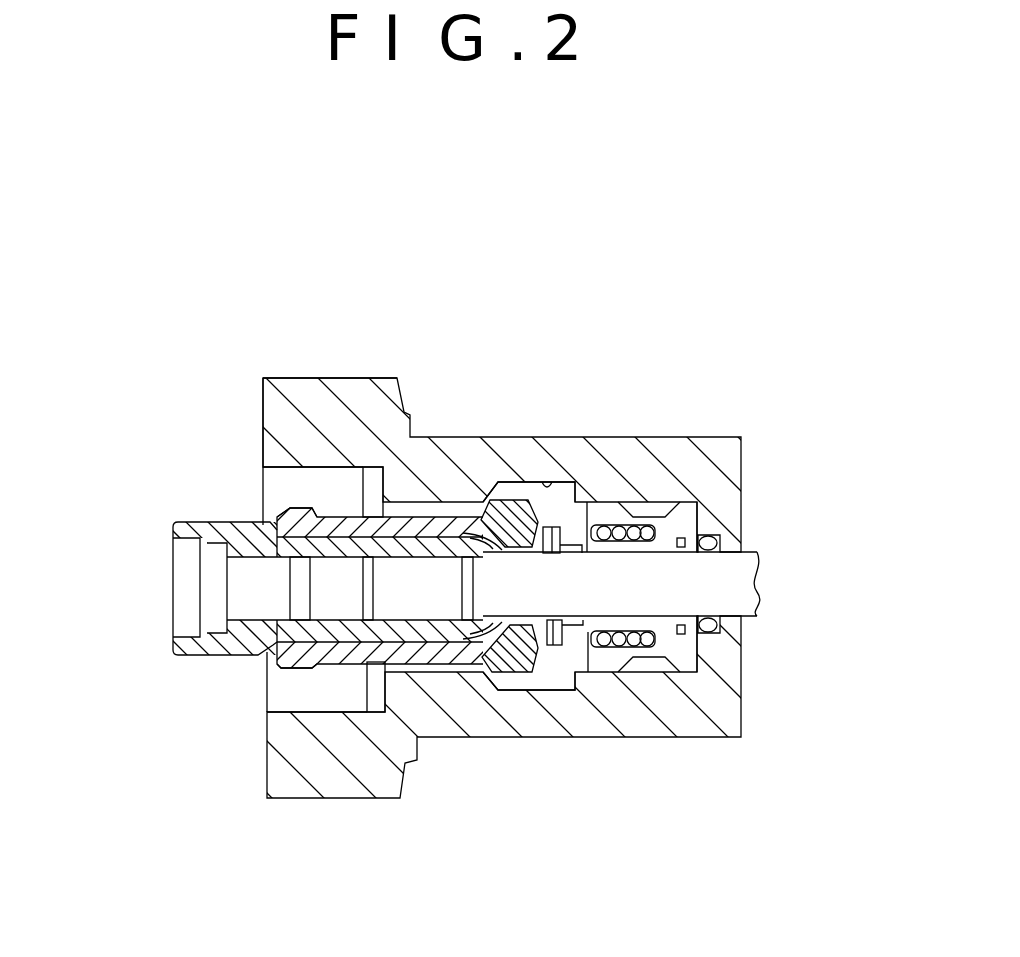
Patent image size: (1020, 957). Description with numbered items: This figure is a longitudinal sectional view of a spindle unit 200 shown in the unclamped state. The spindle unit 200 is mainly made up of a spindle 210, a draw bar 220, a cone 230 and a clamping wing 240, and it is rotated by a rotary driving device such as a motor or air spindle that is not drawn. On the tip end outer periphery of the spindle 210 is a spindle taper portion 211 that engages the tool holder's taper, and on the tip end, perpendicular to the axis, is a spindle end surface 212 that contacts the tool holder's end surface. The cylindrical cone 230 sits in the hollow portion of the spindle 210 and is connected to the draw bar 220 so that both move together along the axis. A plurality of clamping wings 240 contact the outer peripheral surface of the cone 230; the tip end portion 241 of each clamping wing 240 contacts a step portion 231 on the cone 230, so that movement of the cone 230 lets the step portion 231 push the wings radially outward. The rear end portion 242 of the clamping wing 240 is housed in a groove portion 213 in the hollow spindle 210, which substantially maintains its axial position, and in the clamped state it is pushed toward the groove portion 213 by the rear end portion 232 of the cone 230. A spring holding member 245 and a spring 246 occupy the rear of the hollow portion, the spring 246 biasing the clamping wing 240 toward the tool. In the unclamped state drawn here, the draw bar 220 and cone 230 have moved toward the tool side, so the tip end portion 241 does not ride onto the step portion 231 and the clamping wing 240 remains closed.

The spindle unit 200 is at (607, 269).
The spindle 210 is at (672, 456).
The spindle taper portion 211 is at (336, 476).
The spindle end surface 212 is at (262, 425).
The groove portion 213 is at (548, 487).
The draw bar 220 is at (748, 572).
The cone 230 is at (183, 647).
The step portion 231 is at (262, 527).
The rear end portion of the cone 232 is at (484, 548).
The clamping wing 240 is at (435, 650).
The tip end portion of the clamping wing 241 is at (268, 688).
The rear end portion of the clamping wing 242 is at (513, 658).
The spring holding member 245 is at (575, 655).
The spring 246 is at (633, 634).